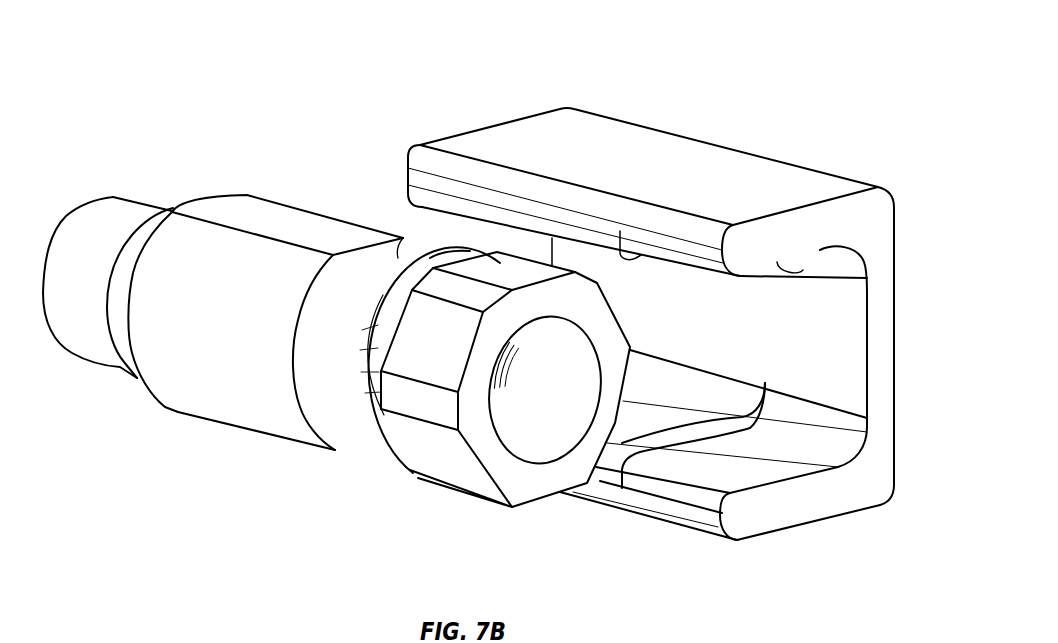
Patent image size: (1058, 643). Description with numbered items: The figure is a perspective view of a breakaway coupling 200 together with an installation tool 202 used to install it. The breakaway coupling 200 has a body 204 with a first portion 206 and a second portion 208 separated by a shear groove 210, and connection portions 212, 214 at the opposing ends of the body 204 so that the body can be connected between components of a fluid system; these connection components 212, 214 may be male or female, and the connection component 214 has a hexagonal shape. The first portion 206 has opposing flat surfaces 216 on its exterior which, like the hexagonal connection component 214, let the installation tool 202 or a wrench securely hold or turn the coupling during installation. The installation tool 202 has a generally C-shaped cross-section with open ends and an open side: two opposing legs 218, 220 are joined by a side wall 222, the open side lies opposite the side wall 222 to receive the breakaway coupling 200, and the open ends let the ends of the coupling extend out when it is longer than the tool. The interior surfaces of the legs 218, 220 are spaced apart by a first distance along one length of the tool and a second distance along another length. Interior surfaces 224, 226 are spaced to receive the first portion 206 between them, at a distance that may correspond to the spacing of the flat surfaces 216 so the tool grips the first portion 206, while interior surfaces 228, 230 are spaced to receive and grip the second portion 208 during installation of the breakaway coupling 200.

The breakaway coupling 200 is at (220, 71).
The installation tool 202 is at (787, 161).
The body 204 is at (405, 230).
The first portion 206 is at (244, 187).
The second portion 208 is at (515, 264).
The shear groove 210 is at (357, 465).
The connection portion 212 is at (113, 187).
The connection portion 214 is at (437, 408).
The flat surfaces 216 is at (300, 217).
The leg 218 is at (572, 200).
The leg 220 is at (630, 514).
The side wall 222 is at (893, 330).
The interior surface 224 is at (472, 220).
The interior surface 226 is at (768, 415).
The interior surface 228 is at (820, 250).
The interior surface 230 is at (731, 479).